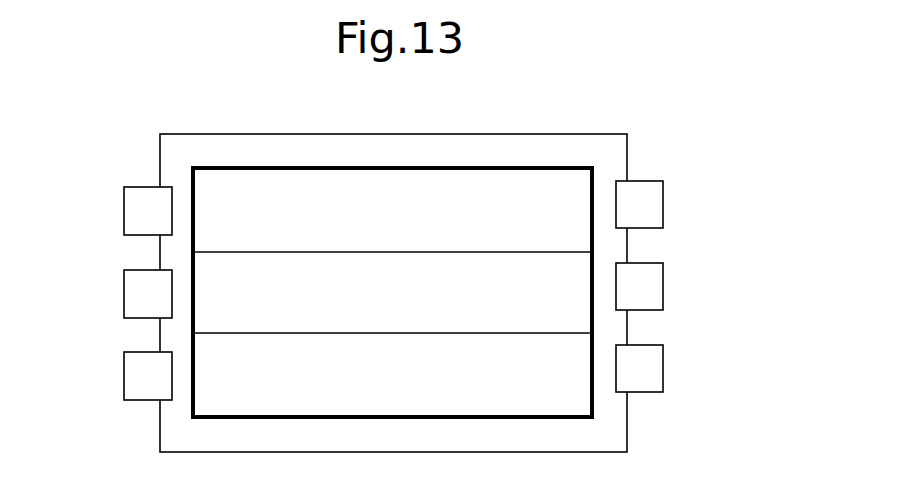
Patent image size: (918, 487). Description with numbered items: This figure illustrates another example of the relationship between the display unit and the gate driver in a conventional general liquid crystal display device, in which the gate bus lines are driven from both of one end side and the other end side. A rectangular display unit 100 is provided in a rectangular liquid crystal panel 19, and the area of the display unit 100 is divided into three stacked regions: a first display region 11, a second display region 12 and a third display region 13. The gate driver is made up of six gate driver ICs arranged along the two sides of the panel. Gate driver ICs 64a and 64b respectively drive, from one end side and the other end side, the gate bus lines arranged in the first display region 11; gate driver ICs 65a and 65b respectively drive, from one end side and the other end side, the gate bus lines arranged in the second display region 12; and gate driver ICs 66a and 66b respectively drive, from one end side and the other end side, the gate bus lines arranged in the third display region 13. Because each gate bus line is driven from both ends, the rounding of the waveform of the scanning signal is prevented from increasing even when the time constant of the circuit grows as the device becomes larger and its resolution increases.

The liquid crystal panel 19 is at (392, 134).
The display unit 100 is at (394, 168).
The first display region 11 is at (535, 203).
The second display region 12 is at (533, 289).
The third display region 13 is at (537, 370).
The gate driver IC 64a is at (124, 215).
The gate driver IC 65a is at (124, 297).
The gate driver IC 66a is at (124, 379).
The gate driver IC 64b is at (664, 197).
The gate driver IC 65b is at (664, 280).
The gate driver IC 66b is at (664, 362).